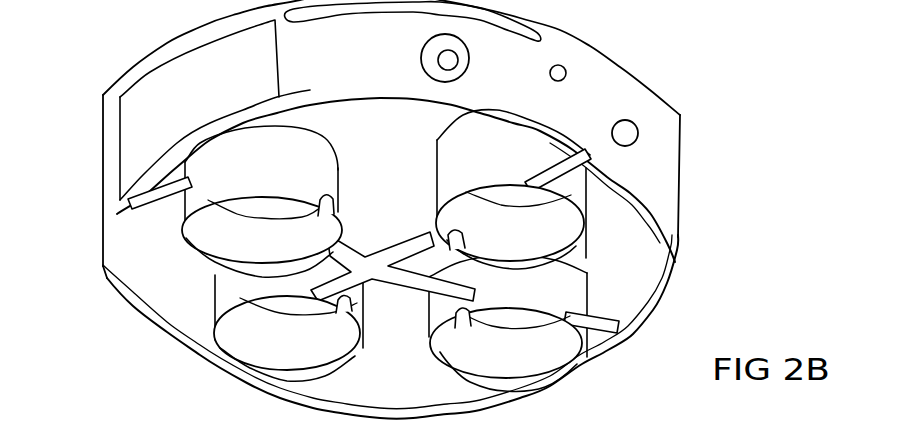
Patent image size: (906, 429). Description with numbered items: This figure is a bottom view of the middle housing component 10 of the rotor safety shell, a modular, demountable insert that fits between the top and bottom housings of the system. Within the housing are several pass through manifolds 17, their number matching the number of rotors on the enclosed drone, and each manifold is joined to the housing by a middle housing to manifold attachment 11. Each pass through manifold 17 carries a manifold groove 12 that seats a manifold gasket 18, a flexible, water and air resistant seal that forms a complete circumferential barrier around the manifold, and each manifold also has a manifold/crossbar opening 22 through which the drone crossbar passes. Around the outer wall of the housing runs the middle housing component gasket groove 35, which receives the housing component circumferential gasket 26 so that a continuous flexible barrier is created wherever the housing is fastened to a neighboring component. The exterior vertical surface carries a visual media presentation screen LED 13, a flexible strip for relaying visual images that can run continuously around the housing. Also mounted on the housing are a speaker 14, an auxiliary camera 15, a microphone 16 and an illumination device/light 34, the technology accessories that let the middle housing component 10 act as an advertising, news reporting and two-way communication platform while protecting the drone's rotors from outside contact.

The middle housing component 10 is at (103, 194).
The middle housing to manifold attachment 11 is at (398, 248).
The manifold groove 12 is at (182, 231).
The visual media presentation screen LED 13 is at (185, 92).
The speaker 14 is at (462, 72).
The auxiliary camera 15 is at (638, 128).
The microphone 16 is at (565, 78).
The pass through manifold 17 is at (283, 172).
The manifold gasket 18 is at (200, 254).
The manifold/crossbar opening 22 is at (336, 210).
The housing component circumferential gasket 26 is at (191, 349).
The illumination device/light 34 is at (538, 36).
The middle housing component gasket groove 35 is at (153, 327).